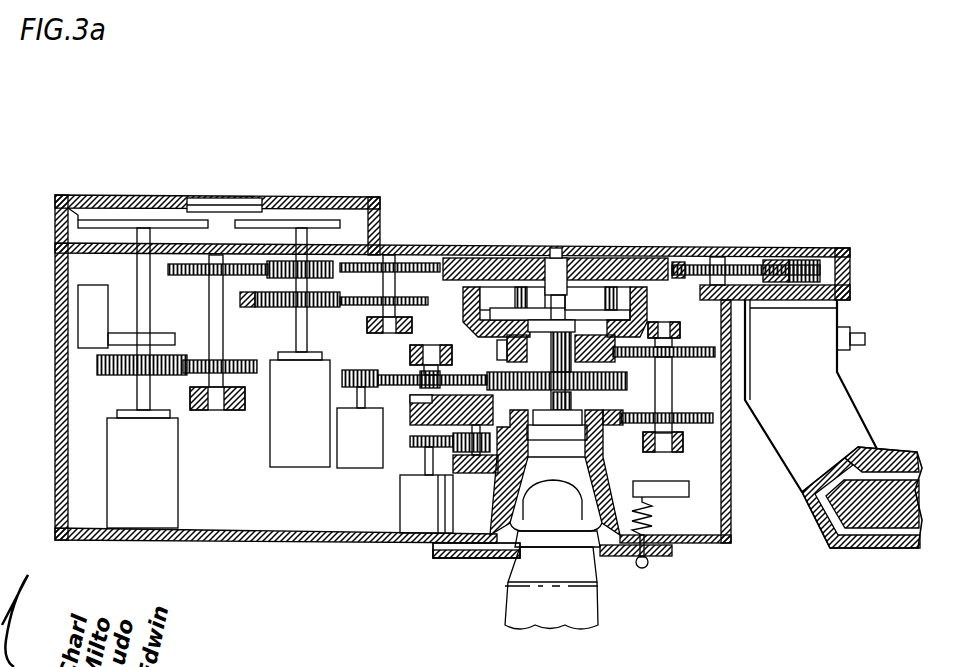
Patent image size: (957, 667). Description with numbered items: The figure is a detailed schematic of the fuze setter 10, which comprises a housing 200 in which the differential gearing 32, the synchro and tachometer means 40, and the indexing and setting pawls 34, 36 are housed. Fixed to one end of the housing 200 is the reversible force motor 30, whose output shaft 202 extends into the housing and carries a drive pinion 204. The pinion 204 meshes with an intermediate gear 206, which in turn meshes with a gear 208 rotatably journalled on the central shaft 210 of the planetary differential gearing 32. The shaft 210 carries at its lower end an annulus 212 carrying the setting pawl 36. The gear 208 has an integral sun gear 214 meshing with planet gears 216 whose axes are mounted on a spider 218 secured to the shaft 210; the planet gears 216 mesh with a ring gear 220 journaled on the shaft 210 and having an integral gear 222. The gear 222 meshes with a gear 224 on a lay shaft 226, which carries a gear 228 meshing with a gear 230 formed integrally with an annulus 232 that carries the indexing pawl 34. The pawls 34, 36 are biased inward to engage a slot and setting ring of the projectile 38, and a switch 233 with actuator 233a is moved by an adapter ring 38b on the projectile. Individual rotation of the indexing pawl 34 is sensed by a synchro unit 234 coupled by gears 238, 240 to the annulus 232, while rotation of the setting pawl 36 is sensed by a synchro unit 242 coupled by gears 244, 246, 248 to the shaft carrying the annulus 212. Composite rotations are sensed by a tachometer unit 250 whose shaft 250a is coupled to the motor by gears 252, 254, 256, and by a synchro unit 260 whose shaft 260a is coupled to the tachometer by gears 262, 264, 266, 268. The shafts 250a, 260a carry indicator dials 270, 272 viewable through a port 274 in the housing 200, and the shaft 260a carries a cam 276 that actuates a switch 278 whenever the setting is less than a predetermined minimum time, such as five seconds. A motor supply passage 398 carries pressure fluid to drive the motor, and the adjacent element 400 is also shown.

The fuze setter 10 is at (462, 345).
The reversible force motor 30 is at (832, 336).
The differential gearing 32 is at (661, 298).
The indexing pawl 34 is at (573, 534).
The setting pawl 36 is at (552, 500).
The projectile 38 is at (598, 607).
The adapter ring 38b is at (522, 550).
The synchro and tachometer means 40 is at (240, 480).
The housing 200 is at (276, 543).
The output shaft 202 is at (828, 265).
The drive pinion 204 is at (800, 262).
The intermediate gear 206 is at (735, 263).
The gear 208 is at (605, 262).
The central shaft 210 is at (560, 258).
The annulus 212 is at (496, 502).
The sun gear 214 is at (548, 258).
The planet gears 216 is at (504, 262).
The spider 218 is at (478, 326).
The ring gear 220 is at (458, 262).
The gear 222 is at (496, 342).
The gear 224 is at (698, 348).
The lay shaft 226 is at (674, 402).
The gear 228 is at (678, 417).
The gear 230 is at (650, 449).
The annulus 232 is at (503, 556).
The switch 233 is at (410, 449).
The actuator 233a is at (630, 568).
The synchro unit 234 is at (426, 490).
The gear 238 is at (453, 473).
The gear 240 is at (535, 425).
The synchro unit 242 is at (360, 427).
The gear 244 is at (362, 373).
The gear 246 is at (410, 379).
The gear 248 is at (600, 389).
The tachometer unit 250 is at (300, 409).
The tachometer shaft 250a is at (302, 230).
The gear 252 is at (238, 320).
The gear 254 is at (366, 314).
The gear 256 is at (432, 260).
The synchro unit 260 is at (142, 469).
The synchro shaft 260a is at (143, 230).
The gear 262 is at (182, 347).
The gear 264 is at (242, 368).
The gear 266 is at (170, 273).
The gear 268 is at (273, 302).
The indicator dial 270 is at (340, 223).
The indicator dial 272 is at (85, 207).
The port 274 is at (205, 200).
The cam 276 is at (101, 304).
The switch 278 is at (80, 350).
The motor supply passage 398 is at (895, 470).
The outer block 400 is at (868, 547).